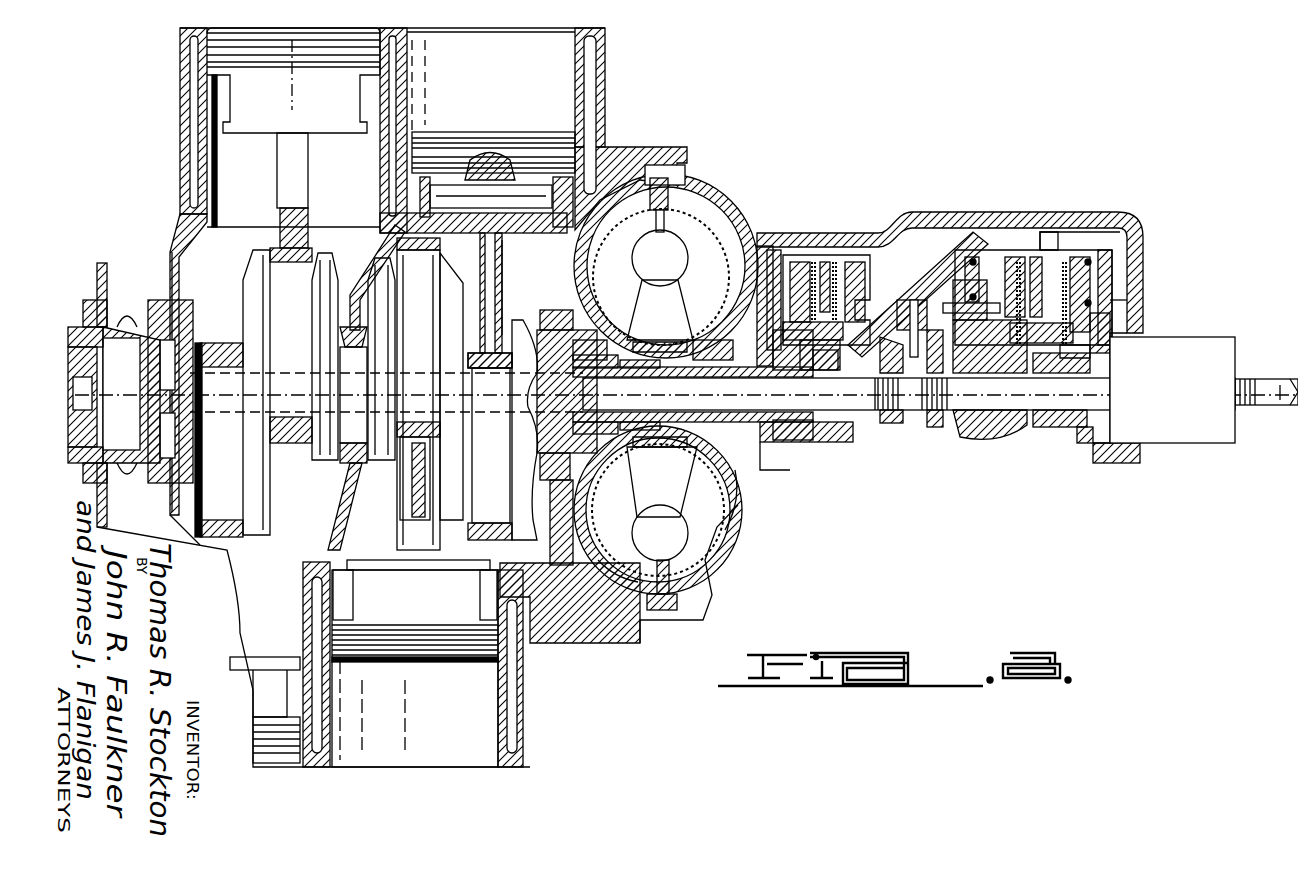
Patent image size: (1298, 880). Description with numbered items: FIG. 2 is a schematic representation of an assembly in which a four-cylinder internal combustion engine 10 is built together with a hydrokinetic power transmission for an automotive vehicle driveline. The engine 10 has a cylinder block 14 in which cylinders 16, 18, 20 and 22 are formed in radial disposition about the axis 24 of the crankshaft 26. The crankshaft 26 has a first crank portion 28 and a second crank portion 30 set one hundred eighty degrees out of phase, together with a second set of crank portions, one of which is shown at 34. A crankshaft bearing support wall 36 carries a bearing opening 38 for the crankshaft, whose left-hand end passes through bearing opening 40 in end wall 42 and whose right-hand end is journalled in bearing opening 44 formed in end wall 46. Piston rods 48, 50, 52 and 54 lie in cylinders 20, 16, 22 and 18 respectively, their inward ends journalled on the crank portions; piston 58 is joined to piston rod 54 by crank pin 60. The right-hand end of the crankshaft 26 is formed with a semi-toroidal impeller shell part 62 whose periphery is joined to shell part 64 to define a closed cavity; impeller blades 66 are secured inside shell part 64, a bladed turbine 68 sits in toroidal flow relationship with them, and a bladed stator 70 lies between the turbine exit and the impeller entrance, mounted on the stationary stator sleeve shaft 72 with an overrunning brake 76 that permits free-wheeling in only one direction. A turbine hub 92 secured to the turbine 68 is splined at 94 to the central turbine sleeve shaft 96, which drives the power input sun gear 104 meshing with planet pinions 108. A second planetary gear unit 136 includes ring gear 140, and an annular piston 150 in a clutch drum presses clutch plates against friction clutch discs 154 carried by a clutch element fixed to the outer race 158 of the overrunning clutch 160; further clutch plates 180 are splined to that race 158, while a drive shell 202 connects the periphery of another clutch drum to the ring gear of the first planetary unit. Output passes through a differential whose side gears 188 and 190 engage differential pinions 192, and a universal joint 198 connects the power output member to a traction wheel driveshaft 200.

The internal combustion engine 10 is at (612, 50).
The cylinder block 14 is at (410, 52).
The cylinder 16 is at (212, 84).
The cylinder 18 is at (412, 78).
The cylinder 20 is at (238, 527).
The cylinder 22 is at (335, 592).
The axis 24 is at (537, 335).
The crankshaft 26 is at (330, 252).
The first crank portion 28 is at (345, 512).
The second crank portion 30 is at (283, 224).
The crankshaft portion 34 is at (483, 565).
The crankshaft bearing support wall 36 is at (345, 484).
The bearing opening 38 is at (355, 345).
The bearing opening 40 is at (195, 300).
The end wall 42 is at (172, 250).
The bearing opening 44 is at (535, 452).
The end wall 46 is at (537, 497).
The piston rod 48 is at (232, 632).
The piston rod 50 is at (292, 172).
The piston rod 52 is at (345, 503).
The piston rod 54 is at (502, 256).
The piston 58 is at (455, 135).
The crank pin 60 is at (525, 190).
The impeller shell part 62 is at (633, 592).
The shell part 64 is at (735, 522).
The impeller blades 66 is at (718, 286).
The bladed turbine 68 is at (630, 304).
The bladed stator 70 is at (662, 398).
The stationary stator sleeve shaft 72 is at (686, 392).
The overrunning brake 76 is at (693, 388).
The turbine hub 92 is at (639, 395).
The spline 94 is at (595, 394).
The central turbine sleeve shaft 96 is at (693, 403).
The power input sun gear 104 is at (840, 442).
The planet pinions 108 is at (813, 385).
The second planetary gear unit 136 is at (950, 290).
The ring gear 140 is at (963, 290).
The annular piston 150 is at (995, 255).
The friction clutch discs 154 is at (1051, 383).
The outer race 158 is at (1120, 310).
The overrunning clutch 160 is at (1093, 350).
The clutch plates 180 is at (1115, 285).
The differential side gear 188 is at (895, 412).
The differential side gear 190 is at (940, 413).
The differential pinions 192 is at (985, 359).
The universal joint 198 is at (1202, 335).
The traction wheel driveshaft 200 is at (1275, 398).
The drive shell 202 is at (1045, 242).